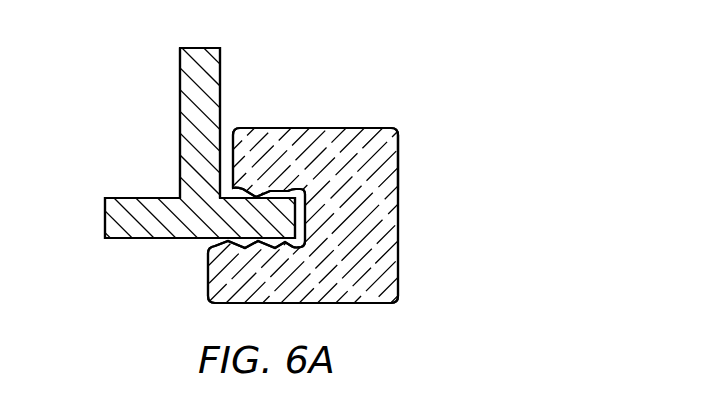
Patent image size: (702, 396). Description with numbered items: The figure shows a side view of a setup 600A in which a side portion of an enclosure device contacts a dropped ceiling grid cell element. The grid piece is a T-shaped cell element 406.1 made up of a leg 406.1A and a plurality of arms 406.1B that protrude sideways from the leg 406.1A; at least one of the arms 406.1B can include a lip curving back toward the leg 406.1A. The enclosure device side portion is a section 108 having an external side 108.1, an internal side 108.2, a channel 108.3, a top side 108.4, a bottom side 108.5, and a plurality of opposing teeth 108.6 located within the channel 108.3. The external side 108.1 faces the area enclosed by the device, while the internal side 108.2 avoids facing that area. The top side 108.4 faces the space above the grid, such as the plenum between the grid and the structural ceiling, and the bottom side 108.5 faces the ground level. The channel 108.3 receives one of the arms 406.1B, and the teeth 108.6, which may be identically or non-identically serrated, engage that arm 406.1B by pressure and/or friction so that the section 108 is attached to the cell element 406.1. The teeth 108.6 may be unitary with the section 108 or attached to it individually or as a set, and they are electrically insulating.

The setup 600A is at (452, 102).
The T-shaped cell element 406.1 is at (143, 66).
The leg 406.1A is at (180, 120).
The arms 406.1B is at (145, 198).
The section 108 is at (478, 236).
The external side 108.1 is at (398, 208).
The internal side 108.2 is at (208, 276).
The channel 108.3 is at (302, 190).
The top side 108.4 is at (298, 130).
The bottom side 108.5 is at (350, 303).
The opposing teeth 108.6 is at (260, 190).